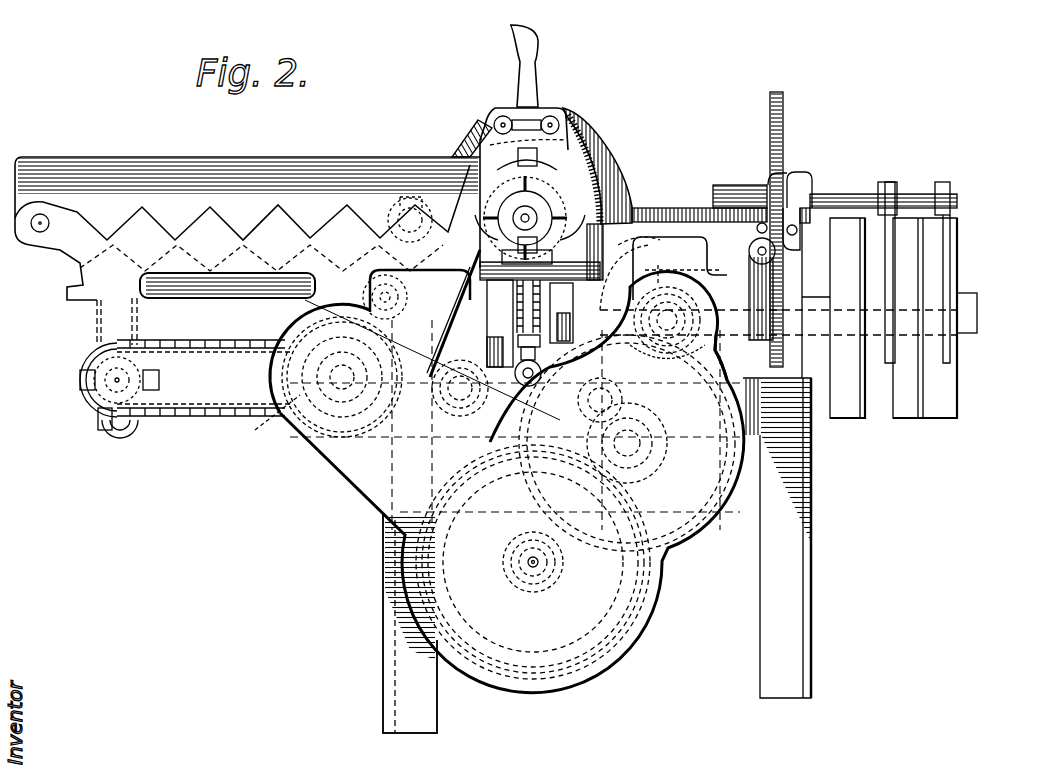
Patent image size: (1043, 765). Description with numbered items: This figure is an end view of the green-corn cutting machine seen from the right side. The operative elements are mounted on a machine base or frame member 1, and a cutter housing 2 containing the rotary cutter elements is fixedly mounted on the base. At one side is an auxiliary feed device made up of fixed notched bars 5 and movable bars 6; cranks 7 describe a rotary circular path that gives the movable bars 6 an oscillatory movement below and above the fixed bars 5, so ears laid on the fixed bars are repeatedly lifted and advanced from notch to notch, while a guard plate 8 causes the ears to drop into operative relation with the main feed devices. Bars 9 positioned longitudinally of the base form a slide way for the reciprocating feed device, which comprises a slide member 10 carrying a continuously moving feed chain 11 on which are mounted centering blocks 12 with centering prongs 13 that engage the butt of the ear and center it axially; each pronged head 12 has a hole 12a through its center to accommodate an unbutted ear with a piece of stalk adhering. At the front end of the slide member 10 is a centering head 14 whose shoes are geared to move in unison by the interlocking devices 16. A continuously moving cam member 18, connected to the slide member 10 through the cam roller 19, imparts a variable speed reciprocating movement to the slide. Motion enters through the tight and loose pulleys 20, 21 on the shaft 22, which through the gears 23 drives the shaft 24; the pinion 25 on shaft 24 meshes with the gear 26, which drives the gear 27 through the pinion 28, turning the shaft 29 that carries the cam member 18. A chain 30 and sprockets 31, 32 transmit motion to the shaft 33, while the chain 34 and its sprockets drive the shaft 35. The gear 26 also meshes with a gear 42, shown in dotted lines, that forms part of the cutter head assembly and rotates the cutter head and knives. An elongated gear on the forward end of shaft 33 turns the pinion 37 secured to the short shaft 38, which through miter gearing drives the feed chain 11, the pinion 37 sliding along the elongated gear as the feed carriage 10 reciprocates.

The machine base or frame member 1 is at (770, 538).
The cutter housing 2 is at (537, 110).
The fixed notched bars 5 is at (247, 228).
The movable bars 6 is at (77, 282).
The cranks 7 is at (117, 420).
The guard plate 8 is at (570, 192).
The bars 9 is at (538, 399).
The slide member 10 is at (500, 310).
The feed chain 11 is at (562, 316).
The centering blocks 12 is at (597, 197).
The hole 12a is at (505, 245).
The centering prongs 13 is at (565, 165).
The centering head 14 is at (590, 155).
The interlocking devices 16 is at (514, 118).
The cam member 18 is at (617, 647).
The cam roller 19 is at (533, 562).
The tight pulley 20 is at (918, 408).
The loose pulley 21 is at (853, 408).
The shaft 22 is at (980, 320).
The gears 23 is at (682, 266).
The shaft 24 is at (680, 290).
The pinion 25 is at (708, 303).
The gear 26 is at (727, 357).
The gear 27 is at (607, 572).
The pinion 28 is at (639, 451).
The shaft 29 is at (538, 564).
The chain 30 is at (380, 537).
The sprocket 31 is at (502, 600).
The sprocket 32 is at (287, 443).
The shaft 33 is at (267, 417).
The chain 34 is at (200, 417).
The shaft 35 is at (157, 380).
The pinion 37 is at (405, 295).
The short shaft 38 is at (373, 287).
The gear 42 is at (650, 232).